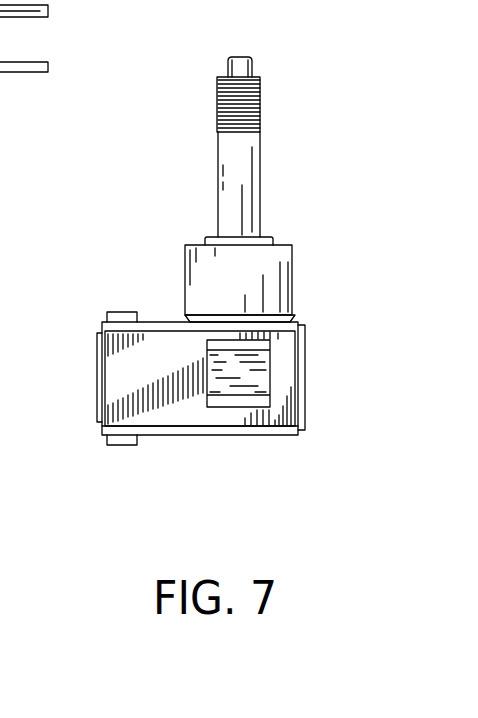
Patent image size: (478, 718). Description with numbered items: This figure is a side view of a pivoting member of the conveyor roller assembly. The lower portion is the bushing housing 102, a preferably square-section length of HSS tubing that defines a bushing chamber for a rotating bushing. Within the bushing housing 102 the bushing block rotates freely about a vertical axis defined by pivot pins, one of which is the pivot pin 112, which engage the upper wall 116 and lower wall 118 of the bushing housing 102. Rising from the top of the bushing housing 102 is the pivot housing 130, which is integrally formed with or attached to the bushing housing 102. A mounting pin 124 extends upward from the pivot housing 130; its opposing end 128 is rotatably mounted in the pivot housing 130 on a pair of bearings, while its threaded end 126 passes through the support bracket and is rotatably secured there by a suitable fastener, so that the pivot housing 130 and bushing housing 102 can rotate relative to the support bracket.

The bushing housing 102 is at (183, 410).
The pivot pin 112 is at (113, 445).
The upper wall 116 is at (152, 320).
The lower wall 118 is at (148, 435).
The mounting pin 124 is at (218, 187).
The end of the mounting pin 126 is at (260, 102).
The opposing end of the mounting pin 128 is at (265, 237).
The pivot housing 130 is at (295, 307).